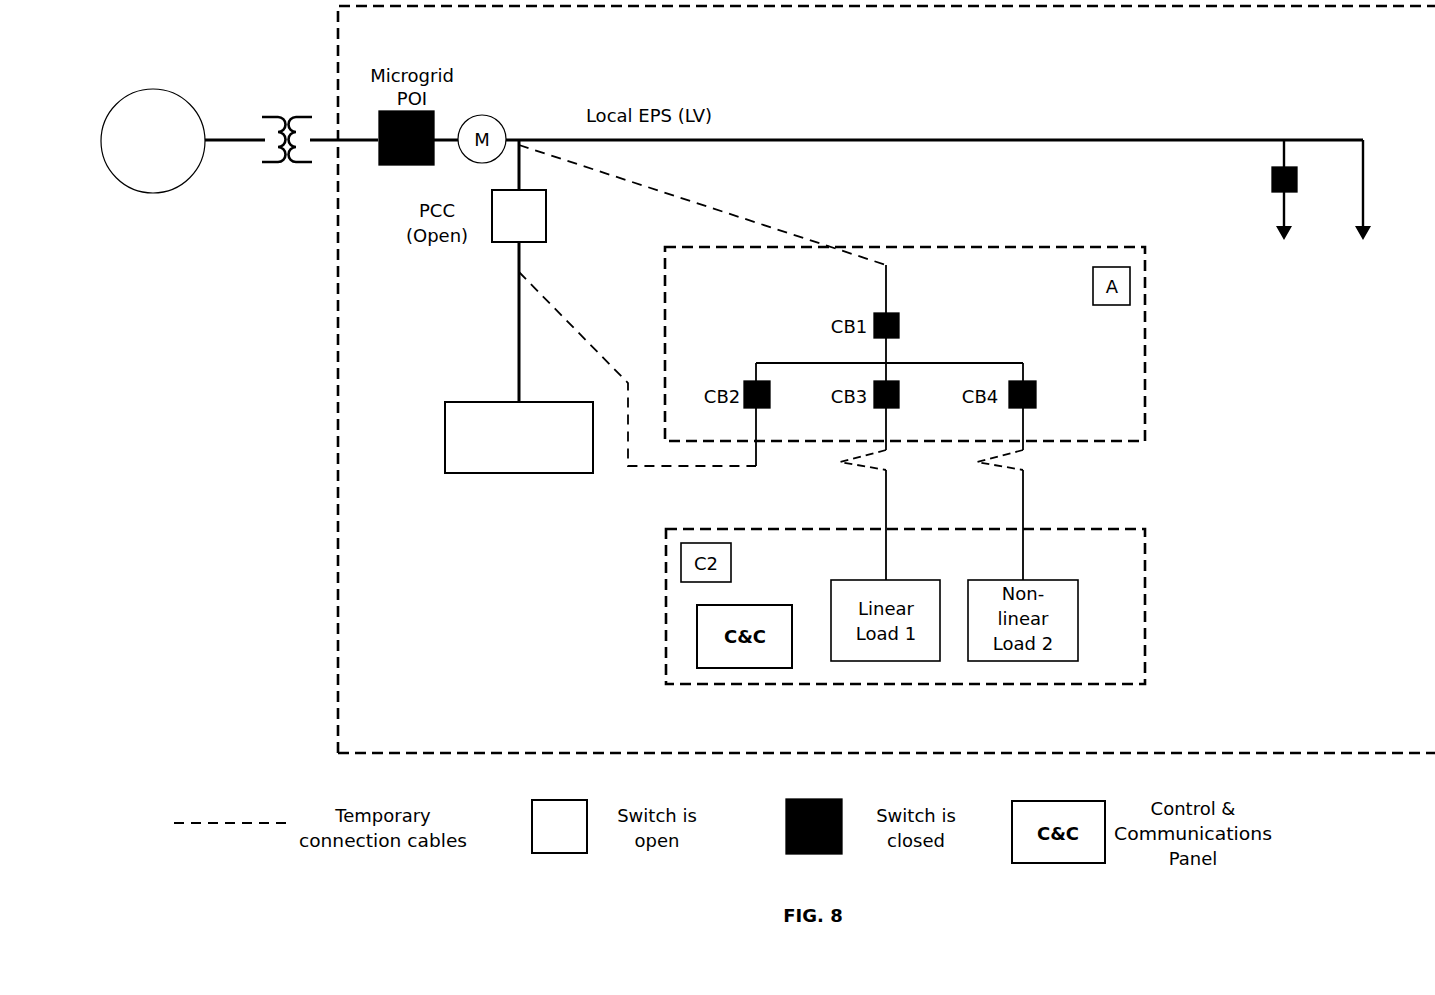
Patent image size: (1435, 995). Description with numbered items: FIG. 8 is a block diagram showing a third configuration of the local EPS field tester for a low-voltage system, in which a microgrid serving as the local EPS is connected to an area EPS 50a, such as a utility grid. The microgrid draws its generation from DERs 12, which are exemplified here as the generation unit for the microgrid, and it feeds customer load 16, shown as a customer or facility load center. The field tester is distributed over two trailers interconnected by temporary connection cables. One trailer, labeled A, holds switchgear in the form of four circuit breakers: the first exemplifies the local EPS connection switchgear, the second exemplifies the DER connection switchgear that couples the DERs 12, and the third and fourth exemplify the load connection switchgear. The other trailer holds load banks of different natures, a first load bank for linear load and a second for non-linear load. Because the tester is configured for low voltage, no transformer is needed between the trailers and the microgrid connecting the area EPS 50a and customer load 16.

The area EPS 50a is at (153, 141).
The DERs 12 is at (516, 467).
The customer load 16 is at (1319, 235).